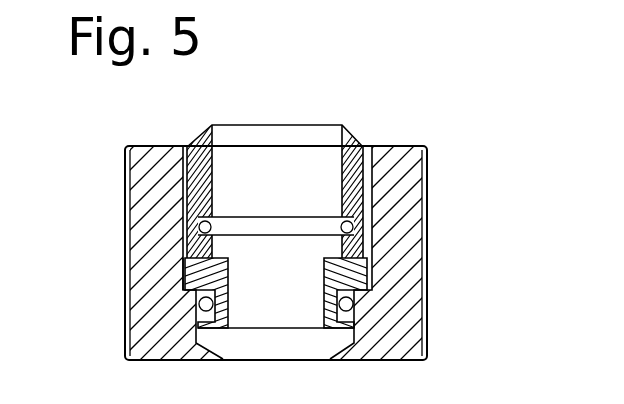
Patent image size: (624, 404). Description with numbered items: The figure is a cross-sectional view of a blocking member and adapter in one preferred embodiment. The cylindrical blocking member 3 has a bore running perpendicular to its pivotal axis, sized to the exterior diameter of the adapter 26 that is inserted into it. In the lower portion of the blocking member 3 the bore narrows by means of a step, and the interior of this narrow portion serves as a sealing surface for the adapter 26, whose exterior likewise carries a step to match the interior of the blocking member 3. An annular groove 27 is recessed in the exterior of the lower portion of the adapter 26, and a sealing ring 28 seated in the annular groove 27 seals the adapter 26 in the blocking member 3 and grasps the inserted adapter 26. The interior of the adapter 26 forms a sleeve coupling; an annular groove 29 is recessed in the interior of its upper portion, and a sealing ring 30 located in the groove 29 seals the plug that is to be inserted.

The blocking member 3 is at (432, 172).
The adapter 26 is at (363, 128).
The annular groove 27 is at (372, 292).
The sealing ring 28 is at (355, 330).
The annular groove 29 is at (188, 213).
The sealing ring 30 is at (182, 262).